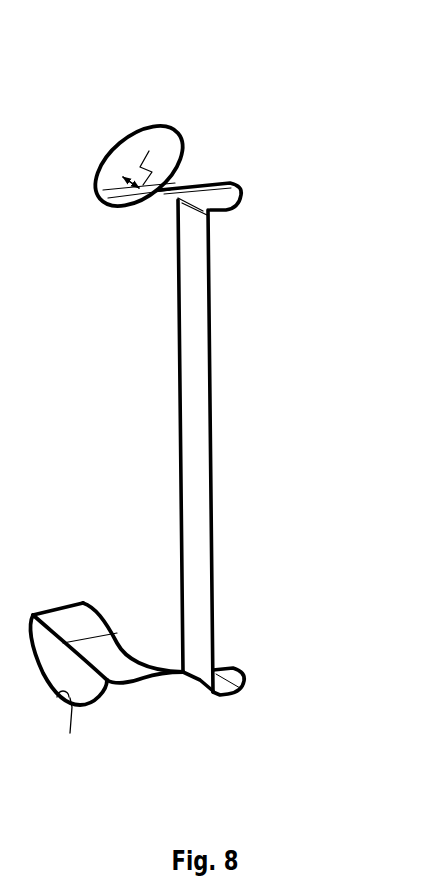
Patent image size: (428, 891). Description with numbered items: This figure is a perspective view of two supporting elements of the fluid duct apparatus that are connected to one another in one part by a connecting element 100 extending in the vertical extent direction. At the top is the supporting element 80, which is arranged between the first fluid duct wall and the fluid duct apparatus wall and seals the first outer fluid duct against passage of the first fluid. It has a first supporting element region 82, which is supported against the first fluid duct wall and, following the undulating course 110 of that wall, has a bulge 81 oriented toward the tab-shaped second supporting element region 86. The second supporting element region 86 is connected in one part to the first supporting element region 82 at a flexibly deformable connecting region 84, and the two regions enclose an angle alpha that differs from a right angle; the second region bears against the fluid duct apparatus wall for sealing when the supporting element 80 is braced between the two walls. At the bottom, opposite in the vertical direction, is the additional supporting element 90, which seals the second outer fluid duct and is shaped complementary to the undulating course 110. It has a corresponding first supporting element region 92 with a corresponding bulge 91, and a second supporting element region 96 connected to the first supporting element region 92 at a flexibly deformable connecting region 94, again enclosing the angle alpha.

The supporting element 80 is at (160, 184).
The bulge 81 is at (200, 178).
The first supporting element region 82 is at (138, 205).
The flexibly deformable connecting region 84 is at (103, 205).
The second supporting element region 86 is at (130, 141).
The additional supporting element 90 is at (93, 645).
The bulge 91 is at (124, 691).
The first supporting element region 92 is at (139, 657).
The flexibly deformable connecting region 94 is at (53, 606).
The second supporting element region 96 is at (56, 642).
The connecting element 100 is at (195, 410).
The undulating course 110 is at (166, 182).